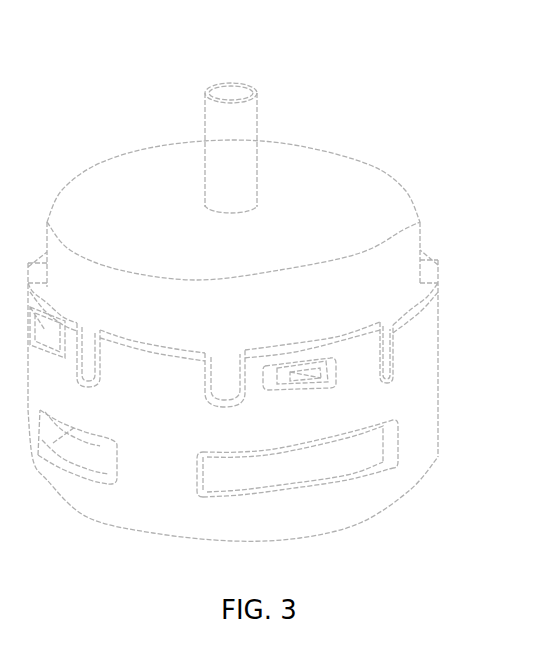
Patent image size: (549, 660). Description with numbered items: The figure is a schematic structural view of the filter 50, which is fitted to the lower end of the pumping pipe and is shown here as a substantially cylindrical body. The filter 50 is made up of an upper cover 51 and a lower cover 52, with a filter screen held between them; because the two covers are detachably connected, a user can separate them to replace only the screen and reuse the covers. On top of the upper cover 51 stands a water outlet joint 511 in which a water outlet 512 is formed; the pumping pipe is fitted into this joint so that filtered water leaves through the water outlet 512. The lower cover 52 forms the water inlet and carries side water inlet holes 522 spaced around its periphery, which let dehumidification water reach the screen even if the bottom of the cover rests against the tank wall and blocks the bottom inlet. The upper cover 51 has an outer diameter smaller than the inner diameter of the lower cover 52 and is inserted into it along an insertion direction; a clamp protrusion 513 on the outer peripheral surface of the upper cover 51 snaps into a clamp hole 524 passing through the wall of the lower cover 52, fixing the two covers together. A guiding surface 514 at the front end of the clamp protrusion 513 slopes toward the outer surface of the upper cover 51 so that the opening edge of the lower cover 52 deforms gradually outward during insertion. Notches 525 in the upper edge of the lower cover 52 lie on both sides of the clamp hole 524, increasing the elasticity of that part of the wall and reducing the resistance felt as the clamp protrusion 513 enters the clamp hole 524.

The filter 50 is at (270, 23).
The upper cover 51 is at (312, 175).
The water outlet joint 511 is at (275, 144).
The water outlet 512 is at (230, 93).
The clamp protrusion 513 is at (333, 358).
The guiding surface 514 is at (312, 370).
The lower cover 52 is at (259, 417).
The side water inlet hole 522 is at (248, 494).
The clamp hole 524 is at (377, 458).
The notch 525 is at (227, 401).